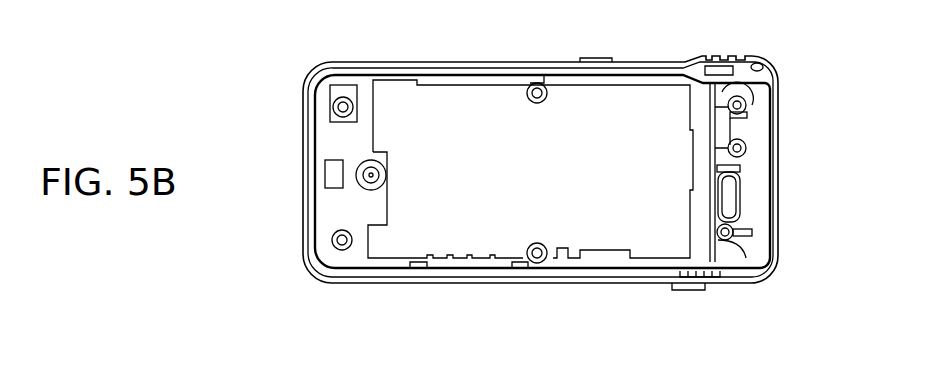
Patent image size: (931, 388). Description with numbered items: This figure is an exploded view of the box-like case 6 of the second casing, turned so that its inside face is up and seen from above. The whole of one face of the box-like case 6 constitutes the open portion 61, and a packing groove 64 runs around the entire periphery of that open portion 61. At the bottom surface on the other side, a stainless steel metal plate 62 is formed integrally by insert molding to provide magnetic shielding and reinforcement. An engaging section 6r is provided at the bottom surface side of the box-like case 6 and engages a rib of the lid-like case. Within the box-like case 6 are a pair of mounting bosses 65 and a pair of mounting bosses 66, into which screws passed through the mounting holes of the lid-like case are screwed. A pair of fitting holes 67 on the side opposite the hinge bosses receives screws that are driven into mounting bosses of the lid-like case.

The box-like case 6 is at (468, 283).
The engaging section 6r is at (520, 283).
The open portion 61 is at (610, 267).
The metal plate 62 is at (460, 120).
The packing groove 64 is at (362, 285).
The mounting bosses 65 is at (738, 92).
The mounting bosses 66 is at (529, 103).
The fitting holes 67 is at (333, 115).